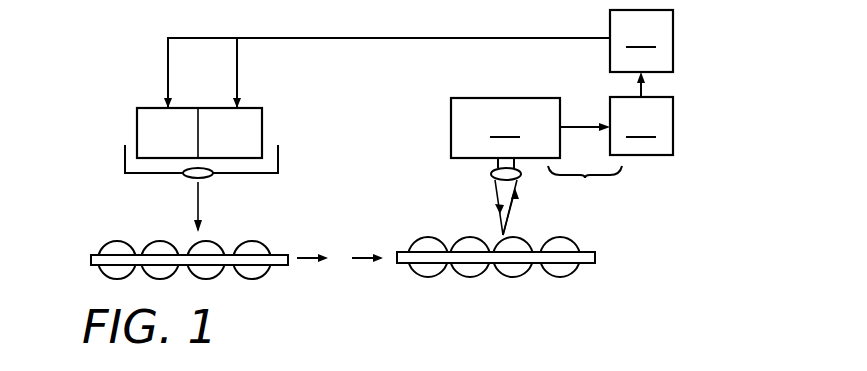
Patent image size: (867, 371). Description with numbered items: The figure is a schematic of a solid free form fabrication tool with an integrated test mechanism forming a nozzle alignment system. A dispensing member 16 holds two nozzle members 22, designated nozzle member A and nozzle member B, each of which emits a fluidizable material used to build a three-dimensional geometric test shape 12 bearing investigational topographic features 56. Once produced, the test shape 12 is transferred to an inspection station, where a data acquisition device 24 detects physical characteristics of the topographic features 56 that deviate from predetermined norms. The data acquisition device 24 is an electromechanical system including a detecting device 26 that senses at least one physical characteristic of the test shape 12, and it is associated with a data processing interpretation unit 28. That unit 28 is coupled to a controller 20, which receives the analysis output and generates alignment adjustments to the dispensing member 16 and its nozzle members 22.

The three-dimensional geometric test shape 12 is at (290, 265).
The dispensing member 16 is at (125, 167).
The controller 20 is at (641, 53).
The nozzle members 22 is at (150, 108).
The data acquisition device 24 is at (585, 178).
The detecting device 26 is at (505, 166).
The data processing interpretation unit 28 is at (616, 126).
The investigational topographic features 56 is at (237, 247).